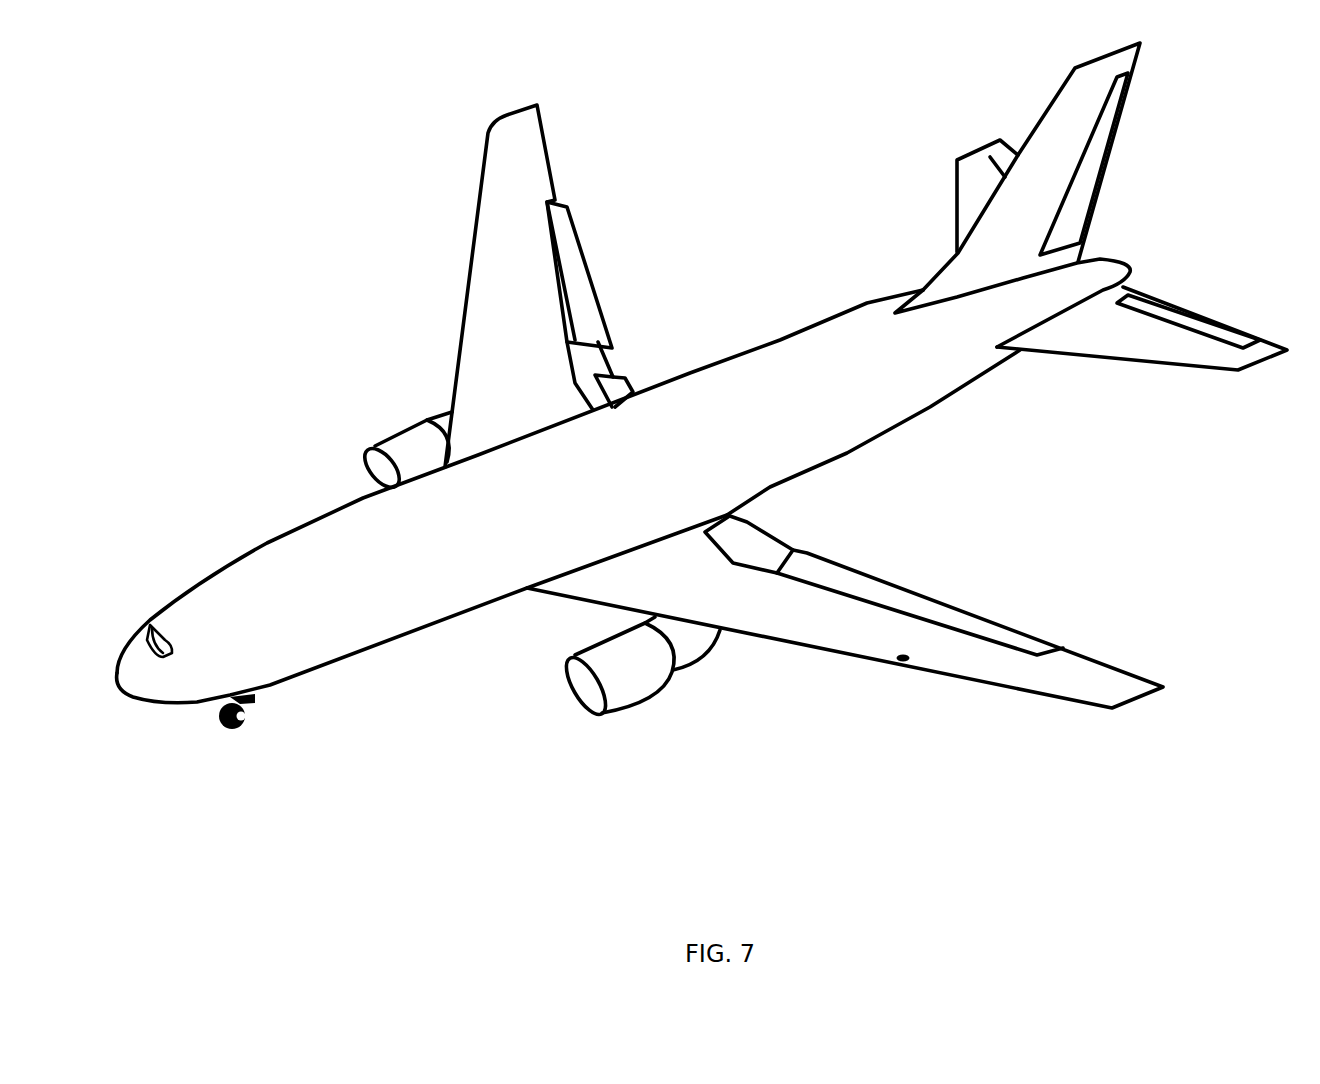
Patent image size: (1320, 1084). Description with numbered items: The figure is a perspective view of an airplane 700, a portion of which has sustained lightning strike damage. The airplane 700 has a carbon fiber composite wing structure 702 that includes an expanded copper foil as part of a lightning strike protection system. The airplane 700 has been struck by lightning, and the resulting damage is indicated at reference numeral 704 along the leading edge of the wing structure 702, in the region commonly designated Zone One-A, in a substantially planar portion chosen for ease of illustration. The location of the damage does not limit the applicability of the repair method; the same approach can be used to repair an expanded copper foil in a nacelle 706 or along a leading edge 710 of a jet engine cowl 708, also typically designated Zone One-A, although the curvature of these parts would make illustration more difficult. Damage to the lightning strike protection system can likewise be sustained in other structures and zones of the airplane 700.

The airplane 700 is at (258, 192).
The carbon fiber composite wing structure 702 is at (1010, 663).
The lightning strike damage 704 is at (902, 655).
The nacelle 706 is at (695, 718).
The jet engine cowl 708 is at (645, 700).
The leading edge 710 is at (573, 690).